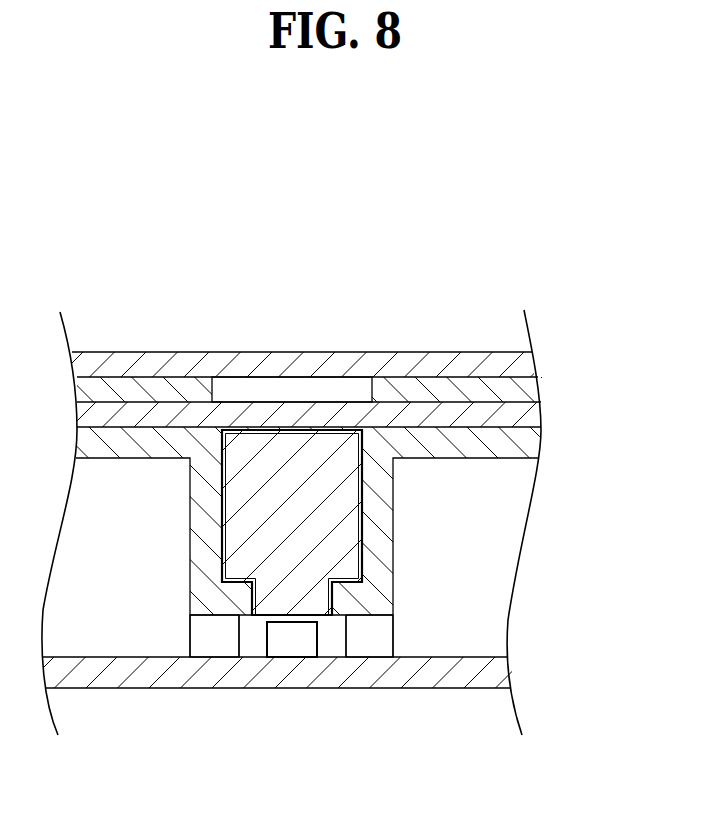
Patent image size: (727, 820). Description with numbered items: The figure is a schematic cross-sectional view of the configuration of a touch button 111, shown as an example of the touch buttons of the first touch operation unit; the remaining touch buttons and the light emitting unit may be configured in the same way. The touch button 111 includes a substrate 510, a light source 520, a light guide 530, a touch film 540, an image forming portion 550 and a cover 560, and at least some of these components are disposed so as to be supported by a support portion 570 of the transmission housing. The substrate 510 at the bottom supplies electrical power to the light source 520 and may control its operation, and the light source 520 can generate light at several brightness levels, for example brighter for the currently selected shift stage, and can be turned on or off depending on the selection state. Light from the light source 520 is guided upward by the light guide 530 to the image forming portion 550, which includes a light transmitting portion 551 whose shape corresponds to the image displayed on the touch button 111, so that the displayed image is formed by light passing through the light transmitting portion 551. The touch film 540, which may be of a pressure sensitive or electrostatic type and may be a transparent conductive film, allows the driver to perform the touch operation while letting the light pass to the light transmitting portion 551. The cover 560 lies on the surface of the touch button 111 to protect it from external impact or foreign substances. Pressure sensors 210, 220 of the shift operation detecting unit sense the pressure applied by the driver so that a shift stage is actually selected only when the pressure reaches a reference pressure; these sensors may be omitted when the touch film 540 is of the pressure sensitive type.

The touch button 111 is at (340, 252).
The pressure sensor 210 is at (210, 642).
The pressure sensor 220 is at (385, 638).
The substrate 510 is at (342, 672).
The light source 520 is at (288, 640).
The light guide 530 is at (283, 567).
The touch film 540 is at (508, 412).
The image forming portion 550 is at (433, 387).
The light transmitting portion 551 is at (293, 393).
The cover 560 is at (343, 360).
The support portion 570 is at (500, 447).